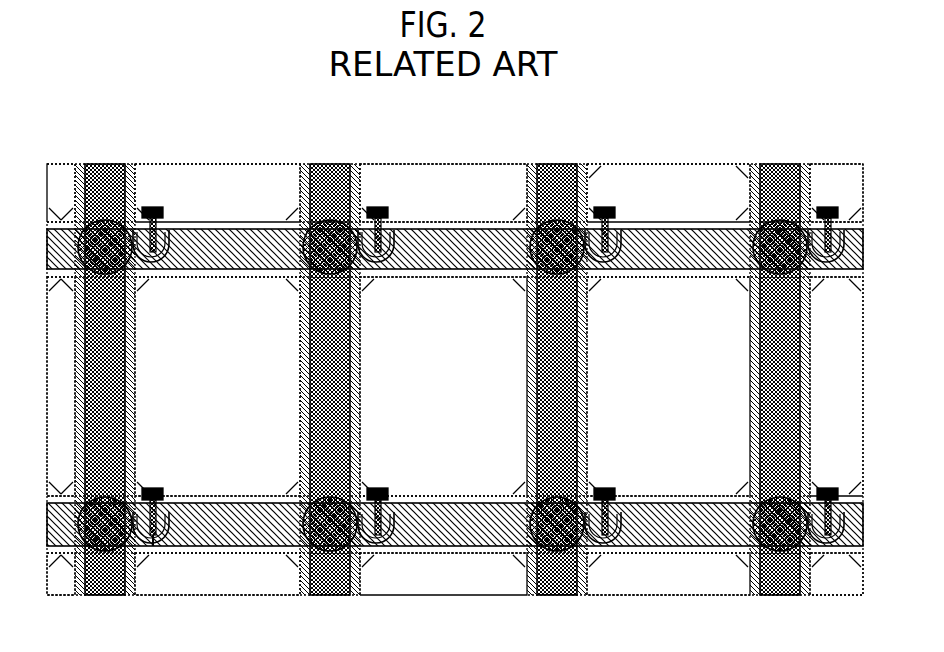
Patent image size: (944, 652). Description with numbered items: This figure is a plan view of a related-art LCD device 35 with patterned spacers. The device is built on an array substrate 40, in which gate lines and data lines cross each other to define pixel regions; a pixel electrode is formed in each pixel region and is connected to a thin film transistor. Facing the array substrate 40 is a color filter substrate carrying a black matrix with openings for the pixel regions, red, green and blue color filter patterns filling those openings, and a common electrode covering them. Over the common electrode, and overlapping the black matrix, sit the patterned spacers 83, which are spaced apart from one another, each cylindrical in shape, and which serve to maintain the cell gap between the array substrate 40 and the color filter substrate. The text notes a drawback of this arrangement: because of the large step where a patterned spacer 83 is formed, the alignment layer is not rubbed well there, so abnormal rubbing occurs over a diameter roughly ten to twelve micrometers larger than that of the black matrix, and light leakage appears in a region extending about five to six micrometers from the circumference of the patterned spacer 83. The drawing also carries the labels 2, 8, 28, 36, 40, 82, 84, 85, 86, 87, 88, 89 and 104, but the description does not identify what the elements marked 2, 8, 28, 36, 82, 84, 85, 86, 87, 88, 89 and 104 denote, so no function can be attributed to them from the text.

The pixel 2 is at (152, 406).
The pixel electrode 8 is at (528, 386).
The data line 28 is at (302, 318).
The LCD device 35 is at (671, 151).
The data line region 36 is at (75, 367).
The array substrate 40 is at (277, 162).
The light shielding line 82 is at (308, 332).
The patterned spacer 83 is at (136, 474).
The drain electrode 84 is at (156, 482).
The source electrode 85 is at (152, 556).
The semiconductor layer 86 is at (141, 555).
The channel 87 is at (174, 551).
The contact hole 88 is at (160, 550).
The gate line 89 is at (207, 553).
The thin film transistor 104 is at (138, 201).